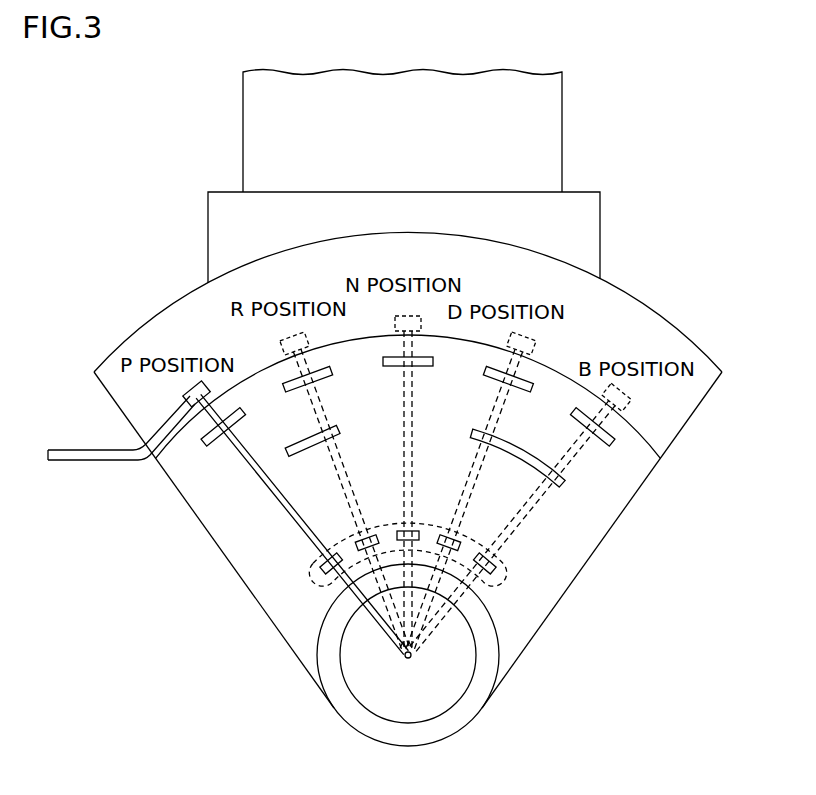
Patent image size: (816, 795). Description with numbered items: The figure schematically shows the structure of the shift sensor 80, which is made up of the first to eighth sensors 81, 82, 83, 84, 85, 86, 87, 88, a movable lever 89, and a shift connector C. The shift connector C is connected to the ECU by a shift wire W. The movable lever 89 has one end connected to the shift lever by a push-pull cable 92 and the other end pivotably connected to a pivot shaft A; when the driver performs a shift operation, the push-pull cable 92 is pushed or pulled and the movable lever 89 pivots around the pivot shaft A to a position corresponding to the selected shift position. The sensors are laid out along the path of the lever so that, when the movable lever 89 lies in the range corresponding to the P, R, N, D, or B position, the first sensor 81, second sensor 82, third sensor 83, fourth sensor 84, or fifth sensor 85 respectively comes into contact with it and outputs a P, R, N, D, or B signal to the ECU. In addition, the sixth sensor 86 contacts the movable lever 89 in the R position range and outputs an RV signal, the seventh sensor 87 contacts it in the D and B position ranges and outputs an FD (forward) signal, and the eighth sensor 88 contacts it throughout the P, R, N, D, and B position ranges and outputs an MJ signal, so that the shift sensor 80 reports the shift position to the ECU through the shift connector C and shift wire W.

The shift sensor 80 is at (551, 613).
The first sensor 81 is at (214, 442).
The second sensor 82 is at (285, 378).
The third sensor 83 is at (390, 357).
The fourth sensor 84 is at (525, 372).
The fifth sensor 85 is at (587, 440).
The sixth sensor 86 is at (310, 462).
The seventh sensor 87 is at (520, 468).
The eighth sensor 88 is at (502, 560).
The movable lever 89 is at (258, 480).
The push-pull cable 92 is at (71, 463).
The pivot shaft A is at (410, 658).
The shift wire W is at (564, 132).
The shift connector C is at (601, 233).